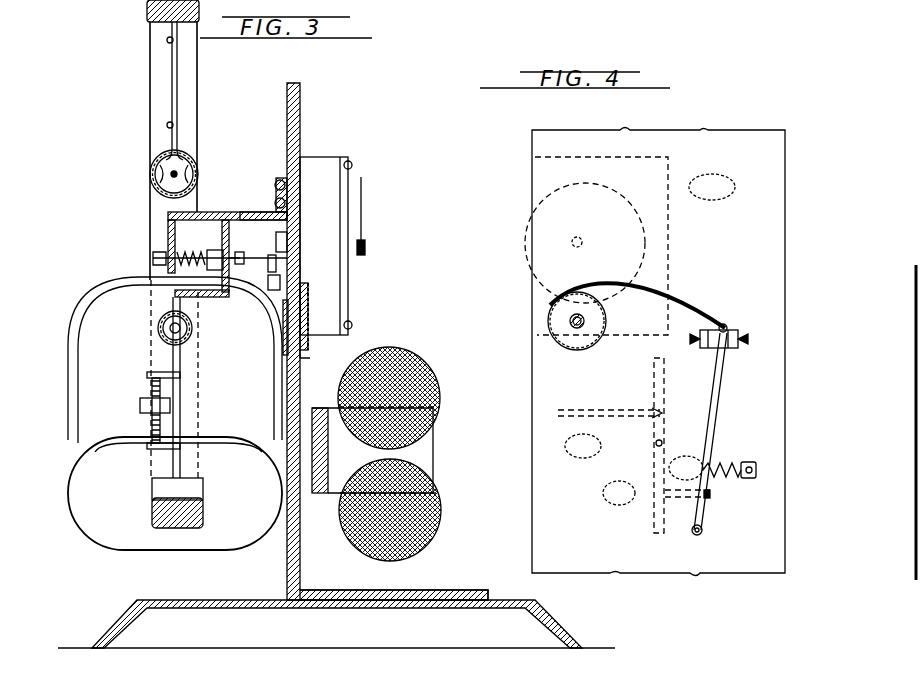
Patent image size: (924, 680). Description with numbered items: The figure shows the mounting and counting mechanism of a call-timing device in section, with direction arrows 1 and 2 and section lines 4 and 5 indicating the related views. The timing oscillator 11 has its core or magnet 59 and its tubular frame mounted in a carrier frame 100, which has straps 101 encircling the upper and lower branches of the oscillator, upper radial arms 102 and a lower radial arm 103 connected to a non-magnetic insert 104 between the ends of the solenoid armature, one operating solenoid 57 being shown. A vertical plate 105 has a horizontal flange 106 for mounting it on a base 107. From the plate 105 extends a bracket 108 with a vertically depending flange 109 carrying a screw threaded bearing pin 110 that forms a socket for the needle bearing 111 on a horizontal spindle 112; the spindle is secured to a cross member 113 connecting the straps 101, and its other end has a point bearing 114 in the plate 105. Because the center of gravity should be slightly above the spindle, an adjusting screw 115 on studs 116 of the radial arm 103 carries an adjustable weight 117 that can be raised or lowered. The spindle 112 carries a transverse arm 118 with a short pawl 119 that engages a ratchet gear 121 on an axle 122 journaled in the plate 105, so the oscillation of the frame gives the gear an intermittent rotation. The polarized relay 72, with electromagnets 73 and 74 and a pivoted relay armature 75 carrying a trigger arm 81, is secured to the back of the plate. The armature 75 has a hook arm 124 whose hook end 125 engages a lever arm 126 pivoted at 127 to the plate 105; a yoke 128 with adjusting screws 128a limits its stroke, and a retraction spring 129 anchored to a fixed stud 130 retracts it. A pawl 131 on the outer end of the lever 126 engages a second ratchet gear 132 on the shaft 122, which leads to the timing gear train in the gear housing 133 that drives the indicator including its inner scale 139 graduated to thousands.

In FIG. 3, the viewing direction arrow 1 is at (382, 201).
In FIG. 3, the viewing direction arrow 2 is at (123, 205).
In FIG. 3, the section line 4 is at (277, 134).
In FIG. 3, the section line 5 is at (245, 232).
In FIG. 3, the timing oscillator 11 is at (152, 176).
In FIG. 3, the operating solenoid 57 is at (78, 380).
In FIG. 3, the core or magnet 59 is at (147, 8).
In FIG. 3, the relay 72 is at (428, 354).
In FIG. 3, the electro-magnet 73 is at (420, 395).
In FIG. 3, the electro-magnet 74 is at (432, 512).
In FIG. 4, the relay armature 75 is at (654, 478).
In FIG. 4, the trigger arm 81 is at (600, 416).
In FIG. 3, the carrier frame 100 is at (170, 97).
In FIG. 3, the straps 101 is at (172, 145).
In FIG. 3, the upper radial arms 102 is at (172, 67).
In FIG. 3, the lower radial arm 103 is at (175, 462).
In FIG. 3, the non-magnetic insert 104 is at (155, 512).
In FIG. 3, the vertical plate 105 is at (298, 108).
In FIG. 4, the vertical plate 105 is at (740, 135).
In FIG. 3, the horizontal flange 106 is at (430, 596).
In FIG. 3, the base 107 is at (568, 630).
In FIG. 3, the bracket 108 is at (212, 213).
In FIG. 3, the vertically depending flange 109 is at (168, 240).
In FIG. 3, the screw threaded bearing pin 110 is at (153, 258).
In FIG. 3, the needle bearing 111 is at (212, 270).
In FIG. 3, the horizontal spindle 112 is at (258, 258).
In FIG. 3, the cross member 113 is at (255, 209).
In FIG. 3, the point bearing 114 is at (298, 252).
In FIG. 3, the adjusting screw 115 is at (152, 422).
In FIG. 3, the studs 116 is at (150, 374).
In FIG. 3, the adjustable weight 117 is at (140, 404).
In FIG. 3, the transverse arm 118 is at (290, 266).
In FIG. 3, the short pawl 119 is at (292, 282).
In FIG. 3, the ratchet gear 121 is at (286, 330).
In FIG. 3, the axle 122 is at (305, 360).
In FIG. 4, the axle 122 is at (575, 322).
In FIG. 4, the hook arm 124 is at (677, 490).
In FIG. 4, the hook end 125 is at (710, 495).
In FIG. 4, the lever arm 126 is at (710, 420).
In FIG. 4, the pivot 127 is at (702, 531).
In FIG. 4, the yoke 128 is at (725, 325).
In FIG. 4, the adjusting screws 128a is at (745, 338).
In FIG. 4, the retraction spring 129 is at (717, 468).
In FIG. 4, the fixed stud 130 is at (756, 468).
In FIG. 4, the pawl 131 is at (686, 302).
In FIG. 3, the ratchet gear 132 is at (308, 305).
In FIG. 4, the ratchet gear 132 is at (577, 345).
In FIG. 4, the gear housing 133 is at (668, 206).
In FIG. 3, the inner scale 139 is at (330, 313).